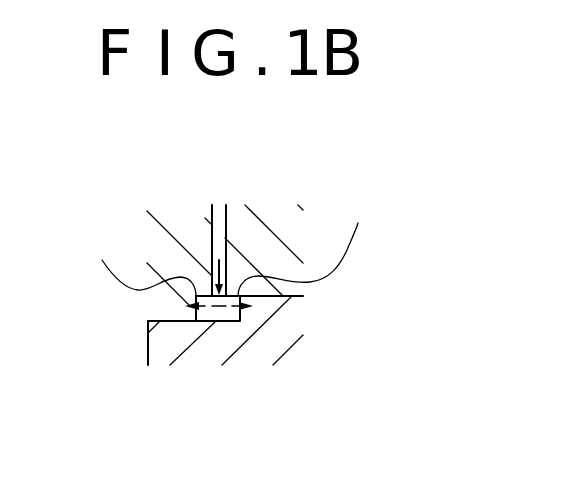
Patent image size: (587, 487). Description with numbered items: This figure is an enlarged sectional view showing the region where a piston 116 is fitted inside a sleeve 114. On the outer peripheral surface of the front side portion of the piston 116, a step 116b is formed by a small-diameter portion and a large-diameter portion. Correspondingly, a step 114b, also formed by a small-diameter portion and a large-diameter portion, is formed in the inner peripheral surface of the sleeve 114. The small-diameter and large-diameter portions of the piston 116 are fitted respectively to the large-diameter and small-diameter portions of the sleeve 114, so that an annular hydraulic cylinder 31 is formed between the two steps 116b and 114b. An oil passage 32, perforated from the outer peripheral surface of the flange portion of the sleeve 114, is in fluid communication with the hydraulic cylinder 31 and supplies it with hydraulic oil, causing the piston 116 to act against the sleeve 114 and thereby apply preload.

The hydraulic cylinder 31 is at (223, 322).
The oil passage 32 is at (218, 232).
The sleeve 114 is at (156, 351).
The step 114b is at (127, 259).
The piston 116 is at (290, 317).
The step 116b is at (320, 243).